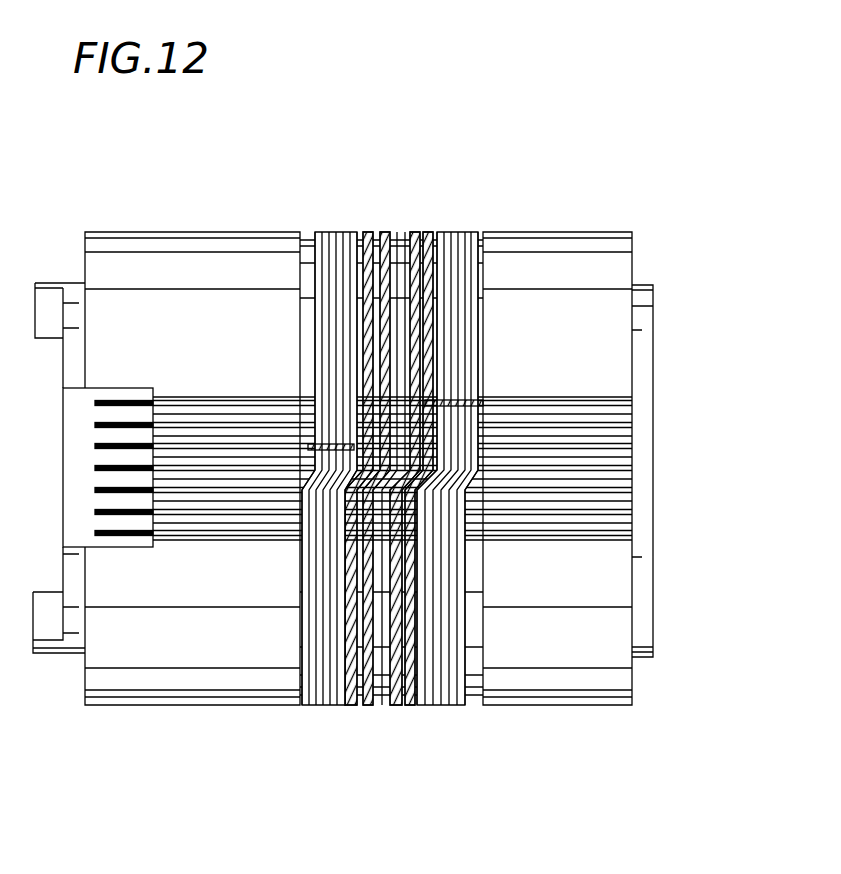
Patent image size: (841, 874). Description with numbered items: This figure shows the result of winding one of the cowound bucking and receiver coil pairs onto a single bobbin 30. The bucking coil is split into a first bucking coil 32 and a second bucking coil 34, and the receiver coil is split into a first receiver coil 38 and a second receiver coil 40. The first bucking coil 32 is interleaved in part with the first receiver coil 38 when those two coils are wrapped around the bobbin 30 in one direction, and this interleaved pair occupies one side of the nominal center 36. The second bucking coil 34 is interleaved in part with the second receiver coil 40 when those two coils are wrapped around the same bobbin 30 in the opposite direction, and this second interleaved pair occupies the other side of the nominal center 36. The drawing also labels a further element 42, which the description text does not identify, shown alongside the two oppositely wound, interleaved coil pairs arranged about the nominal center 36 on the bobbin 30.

The bobbin 30 is at (613, 267).
The first bucking coil 32 is at (334, 232).
The second bucking coil 34 is at (494, 407).
The nominal center 36 is at (393, 232).
The first receiver coil 38 is at (292, 408).
The second receiver coil 40 is at (452, 230).
The contact pins 42 is at (632, 403).